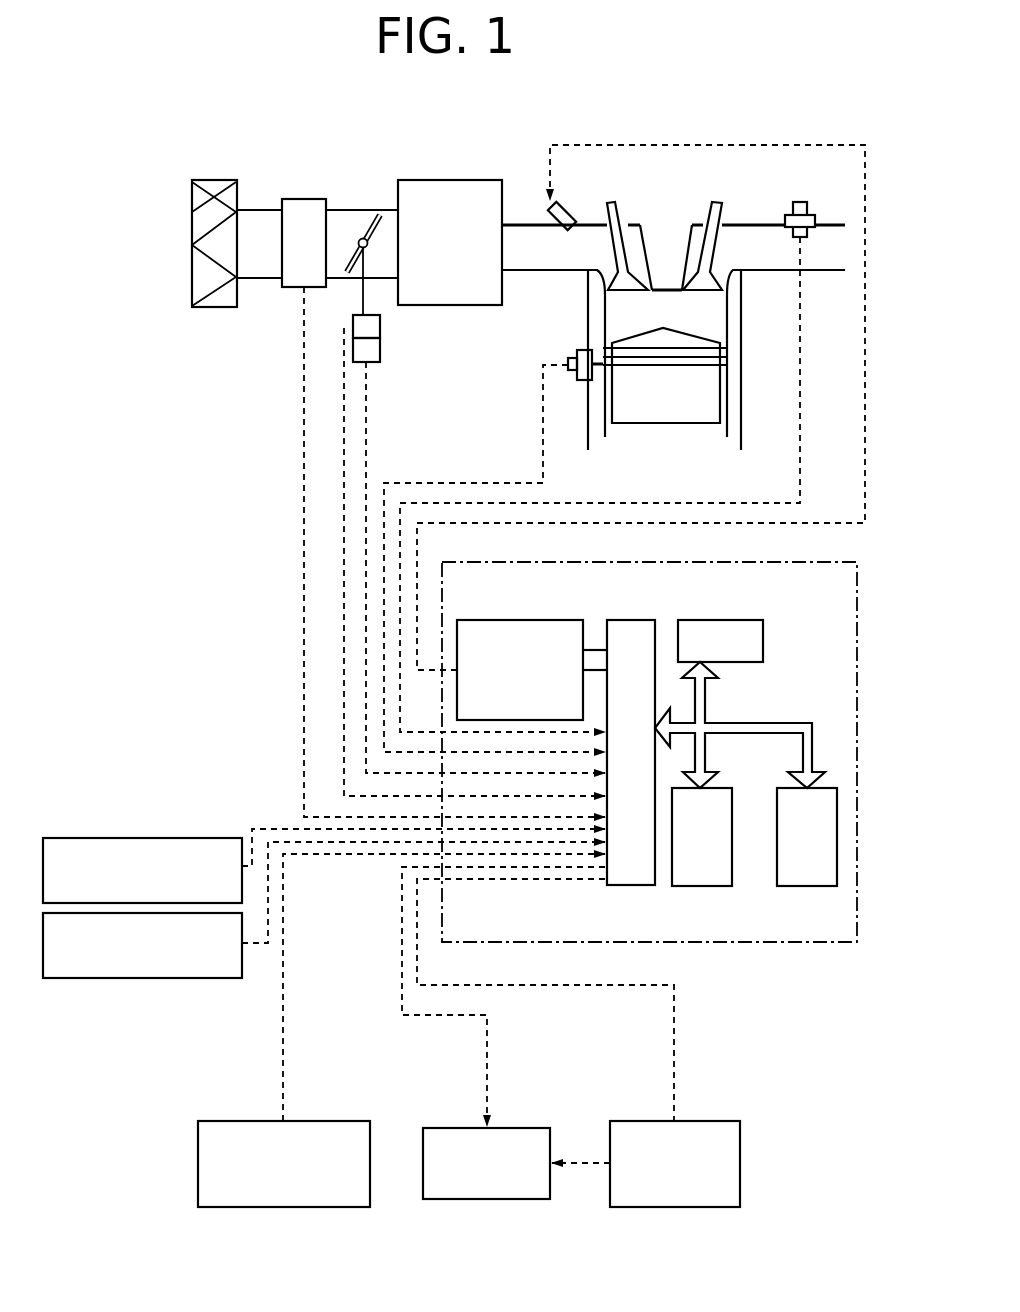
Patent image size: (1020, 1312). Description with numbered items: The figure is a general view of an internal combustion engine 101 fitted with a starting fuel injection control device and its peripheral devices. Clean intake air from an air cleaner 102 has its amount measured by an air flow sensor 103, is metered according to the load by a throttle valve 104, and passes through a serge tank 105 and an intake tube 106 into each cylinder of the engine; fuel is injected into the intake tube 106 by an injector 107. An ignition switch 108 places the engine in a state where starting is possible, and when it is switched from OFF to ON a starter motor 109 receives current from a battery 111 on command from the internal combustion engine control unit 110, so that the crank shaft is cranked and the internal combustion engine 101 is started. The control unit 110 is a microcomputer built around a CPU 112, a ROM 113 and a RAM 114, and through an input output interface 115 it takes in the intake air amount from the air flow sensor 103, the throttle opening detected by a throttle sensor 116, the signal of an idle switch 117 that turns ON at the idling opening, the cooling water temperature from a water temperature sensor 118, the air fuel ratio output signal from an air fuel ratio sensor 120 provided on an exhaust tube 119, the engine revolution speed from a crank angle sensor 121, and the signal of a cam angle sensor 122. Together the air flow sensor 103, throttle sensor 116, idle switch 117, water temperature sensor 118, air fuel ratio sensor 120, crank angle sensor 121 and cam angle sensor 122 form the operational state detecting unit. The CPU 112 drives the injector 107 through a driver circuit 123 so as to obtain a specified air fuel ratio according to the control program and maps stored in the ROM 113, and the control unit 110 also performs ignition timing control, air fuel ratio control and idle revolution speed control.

The internal combustion engine 101 is at (740, 380).
The air cleaner 102 is at (208, 180).
The air flow sensor 103 is at (290, 287).
The throttle valve 104 is at (360, 240).
The serge tank 105 is at (463, 180).
The intake tube 106 is at (540, 272).
The injector 107 is at (572, 207).
The ignition switch 108 is at (338, 1121).
The starter motor 109 is at (526, 1128).
The internal combustion engine control unit 110 is at (857, 623).
The battery 111 is at (706, 1121).
The CPU 112 is at (738, 620).
The ROM 113 is at (810, 887).
The RAM 114 is at (700, 887).
The input output interface 115 is at (635, 620).
The throttle sensor 116 is at (380, 323).
The idle switch 117 is at (380, 353).
The water temperature sensor 118 is at (573, 355).
The exhaust tube 119 is at (817, 272).
The air fuel ratio sensor 120 is at (793, 205).
The crank angle sensor 121 is at (86, 838).
The cam angle sensor 122 is at (86, 980).
The driver circuit 123 is at (507, 620).